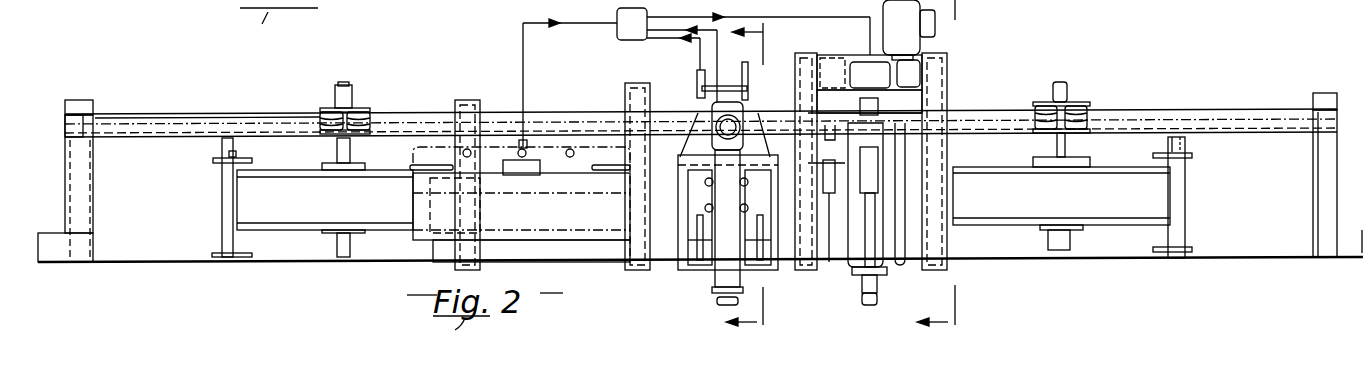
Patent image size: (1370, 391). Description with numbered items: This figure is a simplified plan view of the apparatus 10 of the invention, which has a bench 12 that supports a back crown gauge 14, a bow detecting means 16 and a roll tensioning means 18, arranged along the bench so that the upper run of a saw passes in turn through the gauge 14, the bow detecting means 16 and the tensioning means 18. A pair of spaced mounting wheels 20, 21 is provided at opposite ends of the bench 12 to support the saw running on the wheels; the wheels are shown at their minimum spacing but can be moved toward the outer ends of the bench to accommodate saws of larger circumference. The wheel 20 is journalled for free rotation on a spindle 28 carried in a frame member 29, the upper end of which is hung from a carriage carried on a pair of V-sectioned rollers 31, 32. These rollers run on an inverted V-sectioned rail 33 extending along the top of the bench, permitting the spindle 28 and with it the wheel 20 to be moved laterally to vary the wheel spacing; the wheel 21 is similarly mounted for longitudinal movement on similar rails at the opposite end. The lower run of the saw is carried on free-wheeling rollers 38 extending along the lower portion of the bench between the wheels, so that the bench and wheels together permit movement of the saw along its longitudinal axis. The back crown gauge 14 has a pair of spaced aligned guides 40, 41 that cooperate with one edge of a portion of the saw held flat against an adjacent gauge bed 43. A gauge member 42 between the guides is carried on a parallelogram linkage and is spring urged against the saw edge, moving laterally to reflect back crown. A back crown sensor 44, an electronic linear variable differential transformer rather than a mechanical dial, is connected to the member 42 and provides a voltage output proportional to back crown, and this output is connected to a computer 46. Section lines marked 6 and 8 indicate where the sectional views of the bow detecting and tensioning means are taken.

The section line 6- 6 is at (756, 177).
The section line 8- 8 is at (947, 166).
The apparatus 10 is at (1247, 73).
The bench 12 is at (333, 267).
The back crown gauge 14 is at (540, 124).
The bow detecting means 16 is at (687, 270).
The roll tensioning means 18 is at (923, 116).
The mounting wheel 20 is at (250, 197).
The mounting wheel 21 is at (1153, 183).
The spindle 28 is at (337, 150).
The frame member 29 is at (400, 80).
The V-sectioned roller 31 is at (318, 116).
The V-sectioned roller 32 is at (371, 112).
The inverted V-sectioned rail 33 is at (172, 111).
The free-wheeling roller 38 is at (222, 181).
The guide 40 is at (414, 163).
The guide 41 is at (613, 170).
The gauge member 42 is at (507, 176).
The gauge bed 43 is at (563, 223).
The back crown sensor 44 is at (520, 147).
The computer 46 is at (617, 30).